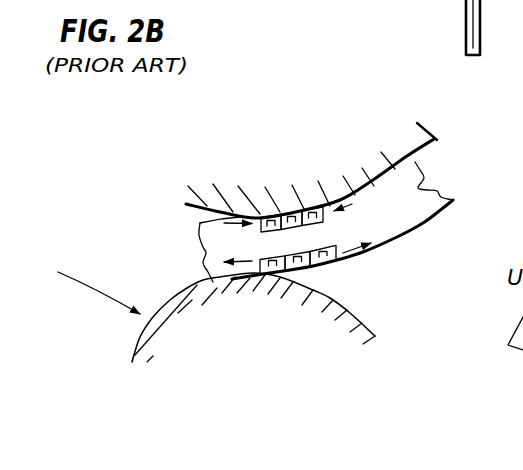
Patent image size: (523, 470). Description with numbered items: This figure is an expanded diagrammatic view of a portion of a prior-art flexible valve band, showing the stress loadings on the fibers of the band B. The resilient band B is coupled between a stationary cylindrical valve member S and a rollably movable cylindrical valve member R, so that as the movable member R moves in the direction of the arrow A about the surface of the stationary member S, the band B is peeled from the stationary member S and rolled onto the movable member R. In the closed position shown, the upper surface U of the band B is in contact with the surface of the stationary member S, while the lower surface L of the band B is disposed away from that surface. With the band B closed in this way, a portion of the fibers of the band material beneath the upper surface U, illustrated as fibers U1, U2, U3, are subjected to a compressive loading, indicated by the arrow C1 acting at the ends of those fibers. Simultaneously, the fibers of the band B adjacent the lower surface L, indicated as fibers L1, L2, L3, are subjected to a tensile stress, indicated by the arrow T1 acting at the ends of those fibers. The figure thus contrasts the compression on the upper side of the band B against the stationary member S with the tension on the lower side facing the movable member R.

The stationary cylindrical valve member S is at (198, 178).
The upper surface of flexible band U is at (397, 170).
The fiber beneath upper surface U1 is at (269, 214).
The fiber beneath upper surface U2 is at (290, 212).
The fiber beneath upper surface U3 is at (313, 210).
The resilient flexible band B is at (418, 188).
The compressive loading arrow C1 is at (362, 201).
The tensile stress arrow T1 is at (370, 236).
The lower surface of flexible band L is at (423, 227).
The fiber adjacent lower surface L1 is at (277, 276).
The fiber adjacent lower surface L2 is at (301, 268).
The fiber adjacent lower surface L3 is at (334, 264).
The rollably movable cylindrical valve member R is at (174, 345).
The direction of movement arrow A is at (99, 293).